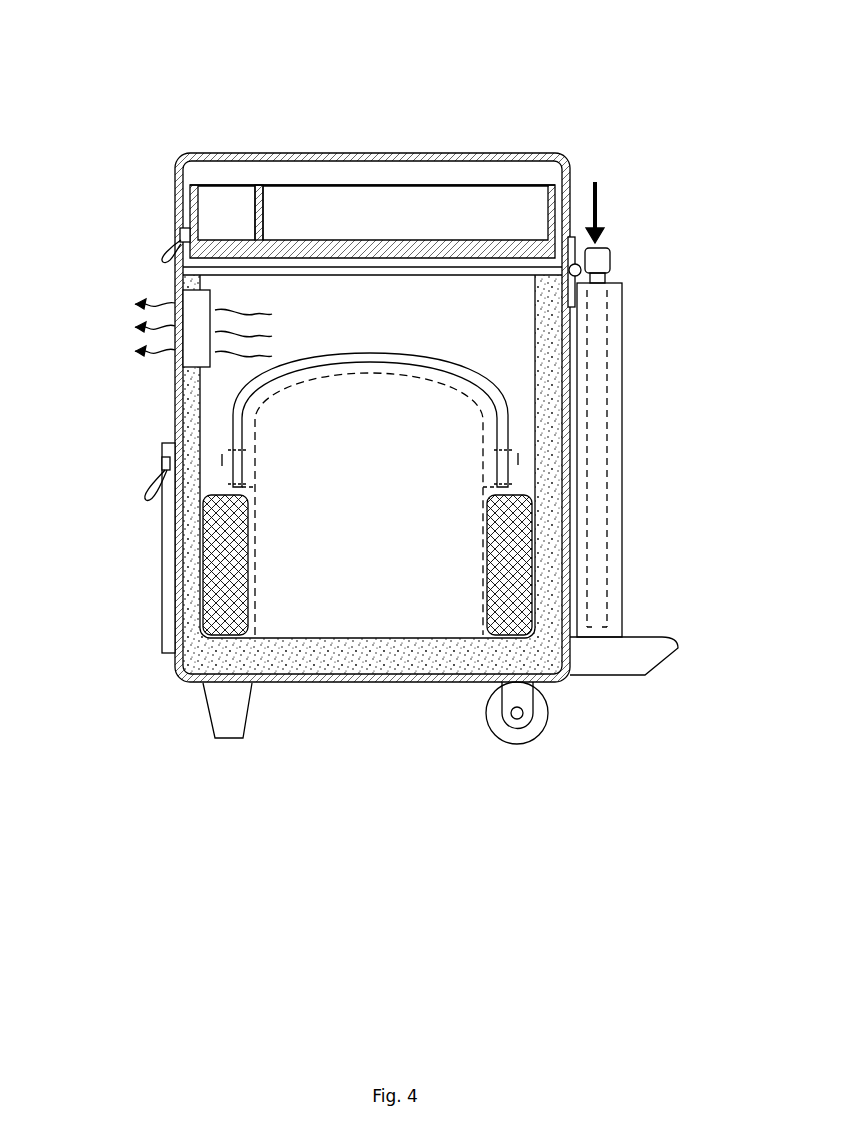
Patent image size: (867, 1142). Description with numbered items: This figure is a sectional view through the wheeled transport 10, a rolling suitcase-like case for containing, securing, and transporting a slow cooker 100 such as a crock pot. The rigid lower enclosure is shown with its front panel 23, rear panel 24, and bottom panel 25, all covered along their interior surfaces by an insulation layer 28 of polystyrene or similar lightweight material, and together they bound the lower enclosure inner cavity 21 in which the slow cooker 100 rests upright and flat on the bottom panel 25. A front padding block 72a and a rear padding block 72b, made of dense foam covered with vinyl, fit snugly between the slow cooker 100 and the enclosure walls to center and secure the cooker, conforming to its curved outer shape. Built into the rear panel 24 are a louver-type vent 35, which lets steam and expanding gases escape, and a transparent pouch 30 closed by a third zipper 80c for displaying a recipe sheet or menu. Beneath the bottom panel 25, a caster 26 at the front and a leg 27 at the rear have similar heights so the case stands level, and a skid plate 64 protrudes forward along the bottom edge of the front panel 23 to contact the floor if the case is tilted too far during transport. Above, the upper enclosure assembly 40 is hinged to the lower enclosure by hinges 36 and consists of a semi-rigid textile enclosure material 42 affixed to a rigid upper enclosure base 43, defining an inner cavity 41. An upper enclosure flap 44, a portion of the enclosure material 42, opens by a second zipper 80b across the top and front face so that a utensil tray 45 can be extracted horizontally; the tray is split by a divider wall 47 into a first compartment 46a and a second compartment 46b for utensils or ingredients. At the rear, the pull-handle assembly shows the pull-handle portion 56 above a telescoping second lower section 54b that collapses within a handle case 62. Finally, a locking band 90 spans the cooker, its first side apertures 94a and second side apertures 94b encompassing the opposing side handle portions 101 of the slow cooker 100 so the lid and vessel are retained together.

The wheeled transport 10 is at (655, 118).
The lower enclosure inner cavity 21 is at (404, 300).
The front panel 23 is at (560, 505).
The rear panel 24 is at (175, 433).
The bottom panel 25 is at (382, 683).
The casters 26 is at (510, 740).
The legs 27 is at (222, 713).
The insulation layer 28 is at (330, 660).
The pouch 30 is at (162, 572).
The louver-type vent 35 is at (165, 293).
The hinges 36 is at (571, 266).
The upper enclosure assembly 40 is at (268, 138).
The inner cavity 41 is at (466, 168).
The enclosure material 42 is at (554, 155).
The upper enclosure base 43 is at (178, 267).
The upper enclosure flap 44 is at (183, 157).
The utensil tray 45 is at (392, 185).
The first compartment 46a is at (216, 245).
The second compartment 46b is at (345, 245).
The divider wall 47 is at (258, 217).
The second lower section 54b is at (607, 360).
The pull-handle portion 56 is at (602, 254).
The handle case 62 is at (622, 310).
The skid plate 64 is at (680, 643).
The front padding block 72a is at (520, 580).
The rear padding block 72b is at (218, 578).
The second zipper 80b is at (180, 236).
The third zipper 80c is at (147, 494).
The locking band 90 is at (458, 361).
The first side apertures 94a is at (240, 460).
The second side apertures 94b is at (500, 463).
The slow cooker 100 is at (323, 377).
The side handle portions 101 is at (221, 460).